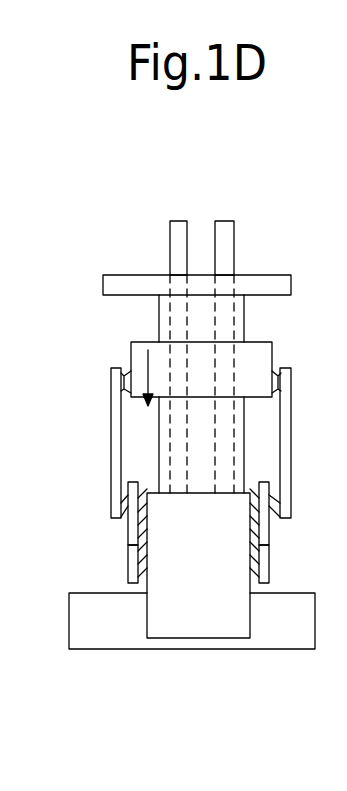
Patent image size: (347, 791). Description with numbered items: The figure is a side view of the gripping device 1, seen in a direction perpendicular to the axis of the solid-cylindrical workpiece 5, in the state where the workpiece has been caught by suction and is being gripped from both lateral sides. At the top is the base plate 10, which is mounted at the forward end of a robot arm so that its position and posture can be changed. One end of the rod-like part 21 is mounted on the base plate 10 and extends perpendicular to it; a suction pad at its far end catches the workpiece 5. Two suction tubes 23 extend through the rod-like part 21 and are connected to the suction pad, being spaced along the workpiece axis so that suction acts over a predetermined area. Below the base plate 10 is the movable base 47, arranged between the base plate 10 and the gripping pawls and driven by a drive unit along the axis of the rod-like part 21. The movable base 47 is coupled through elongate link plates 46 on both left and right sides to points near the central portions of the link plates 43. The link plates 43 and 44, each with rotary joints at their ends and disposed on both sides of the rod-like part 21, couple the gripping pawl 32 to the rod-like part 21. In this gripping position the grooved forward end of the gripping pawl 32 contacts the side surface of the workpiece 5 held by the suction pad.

The gripping device 1 is at (82, 381).
The suction tube 23 is at (180, 227).
The base plate 10 is at (270, 286).
The rod-like part 21 is at (237, 445).
The movable base 47 is at (247, 352).
The link plate 46 is at (113, 450).
The link plate 43 is at (133, 530).
The link plate 44 is at (133, 568).
The gripping pawl 32 is at (177, 627).
The workpiece 5 is at (280, 635).